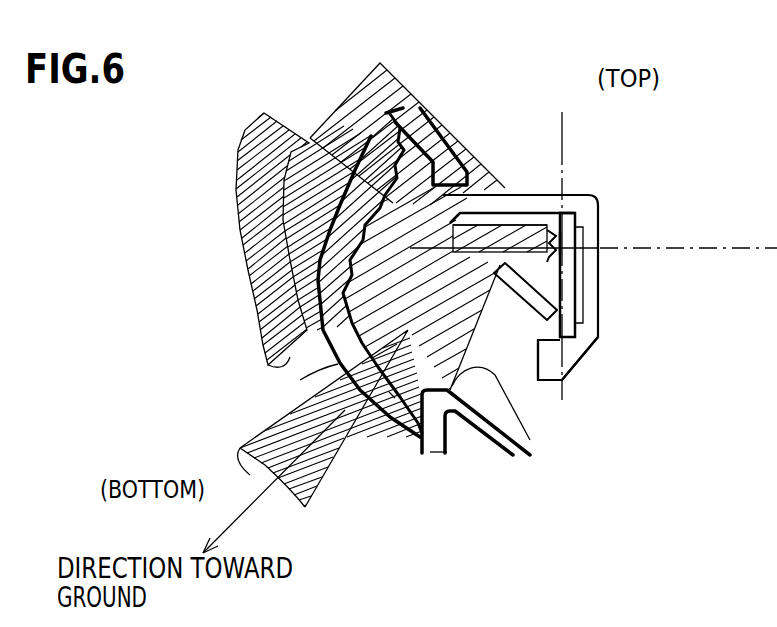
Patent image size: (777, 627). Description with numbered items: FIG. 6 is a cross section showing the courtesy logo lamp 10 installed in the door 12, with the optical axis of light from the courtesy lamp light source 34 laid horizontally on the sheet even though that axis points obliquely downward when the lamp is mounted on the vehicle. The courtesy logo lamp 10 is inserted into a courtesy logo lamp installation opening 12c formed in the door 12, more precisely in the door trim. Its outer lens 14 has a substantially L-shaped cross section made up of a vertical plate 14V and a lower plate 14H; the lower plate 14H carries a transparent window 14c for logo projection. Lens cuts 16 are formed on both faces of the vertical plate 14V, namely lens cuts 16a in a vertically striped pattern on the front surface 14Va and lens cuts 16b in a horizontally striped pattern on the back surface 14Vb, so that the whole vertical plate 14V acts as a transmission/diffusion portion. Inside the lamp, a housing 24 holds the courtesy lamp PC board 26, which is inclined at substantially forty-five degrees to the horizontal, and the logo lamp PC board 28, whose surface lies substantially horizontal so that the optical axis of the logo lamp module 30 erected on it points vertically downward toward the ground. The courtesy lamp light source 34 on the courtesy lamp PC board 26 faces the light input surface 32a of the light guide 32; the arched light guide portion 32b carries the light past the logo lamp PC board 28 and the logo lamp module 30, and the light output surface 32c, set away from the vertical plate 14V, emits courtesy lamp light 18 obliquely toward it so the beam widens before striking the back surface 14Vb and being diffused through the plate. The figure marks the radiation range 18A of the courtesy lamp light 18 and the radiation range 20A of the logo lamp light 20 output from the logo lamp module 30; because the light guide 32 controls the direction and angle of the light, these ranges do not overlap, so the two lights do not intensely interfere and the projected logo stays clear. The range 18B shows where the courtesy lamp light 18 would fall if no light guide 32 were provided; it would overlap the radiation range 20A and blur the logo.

The courtesy logo lamp 10 is at (614, 176).
The door 12 is at (392, 110).
The courtesy logo lamp installation opening 12c is at (497, 402).
The outer lens 14 is at (369, 131).
The vertical plate 14V is at (350, 115).
The front surface 14Va is at (333, 220).
The back surface 14Vb is at (410, 137).
The transparent window 14c is at (300, 380).
The lower plate 14H is at (389, 392).
The seal 16 is at (382, 273).
The lens cuts 16a is at (320, 237).
The lens cuts 16b is at (414, 140).
The courtesy lamp light 18 is at (272, 378).
The radiation range 18A is at (267, 253).
The radiation range 18B is at (325, 120).
The logo lamp light 20 is at (317, 473).
The radiation range 20A is at (277, 447).
The housing 24 is at (598, 234).
The courtesy lamp PC board 26 is at (568, 300).
The logo lamp PC board 28 is at (580, 345).
The logo lamp module 30 is at (468, 365).
The light guide 32 is at (563, 198).
The light input surface 32a is at (563, 238).
The light guide portion 32b is at (515, 236).
The light output surface 32c is at (487, 226).
The courtesy lamp light source 34 is at (565, 255).